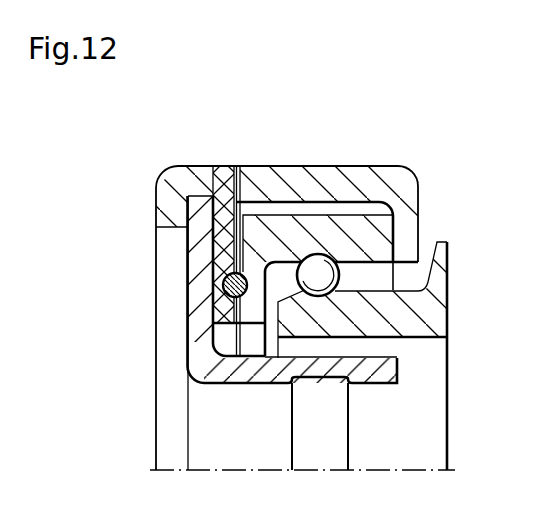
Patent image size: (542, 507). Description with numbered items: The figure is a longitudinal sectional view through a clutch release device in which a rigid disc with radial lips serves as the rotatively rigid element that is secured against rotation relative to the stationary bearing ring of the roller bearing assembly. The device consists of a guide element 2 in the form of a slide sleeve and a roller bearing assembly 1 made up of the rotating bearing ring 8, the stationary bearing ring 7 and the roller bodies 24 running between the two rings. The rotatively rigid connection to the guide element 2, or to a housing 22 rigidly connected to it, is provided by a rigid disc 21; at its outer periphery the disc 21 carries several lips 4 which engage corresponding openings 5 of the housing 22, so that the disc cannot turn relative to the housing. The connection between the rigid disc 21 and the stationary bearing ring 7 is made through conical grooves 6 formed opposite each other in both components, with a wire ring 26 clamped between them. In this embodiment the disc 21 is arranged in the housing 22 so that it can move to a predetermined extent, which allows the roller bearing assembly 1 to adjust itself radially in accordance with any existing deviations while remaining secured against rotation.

The roller bearing assembly 1 is at (465, 232).
The guide element 2 is at (389, 376).
The lips 4 is at (222, 183).
The openings 5 is at (240, 178).
The conical grooves 6 is at (214, 316).
The stationary bearing ring 7 is at (372, 230).
The rotating bearing ring 8 is at (428, 310).
The rigid disc 21 is at (224, 209).
The housing 22 is at (362, 182).
The roller bodies 24 is at (315, 282).
The wire ring 26 is at (225, 288).